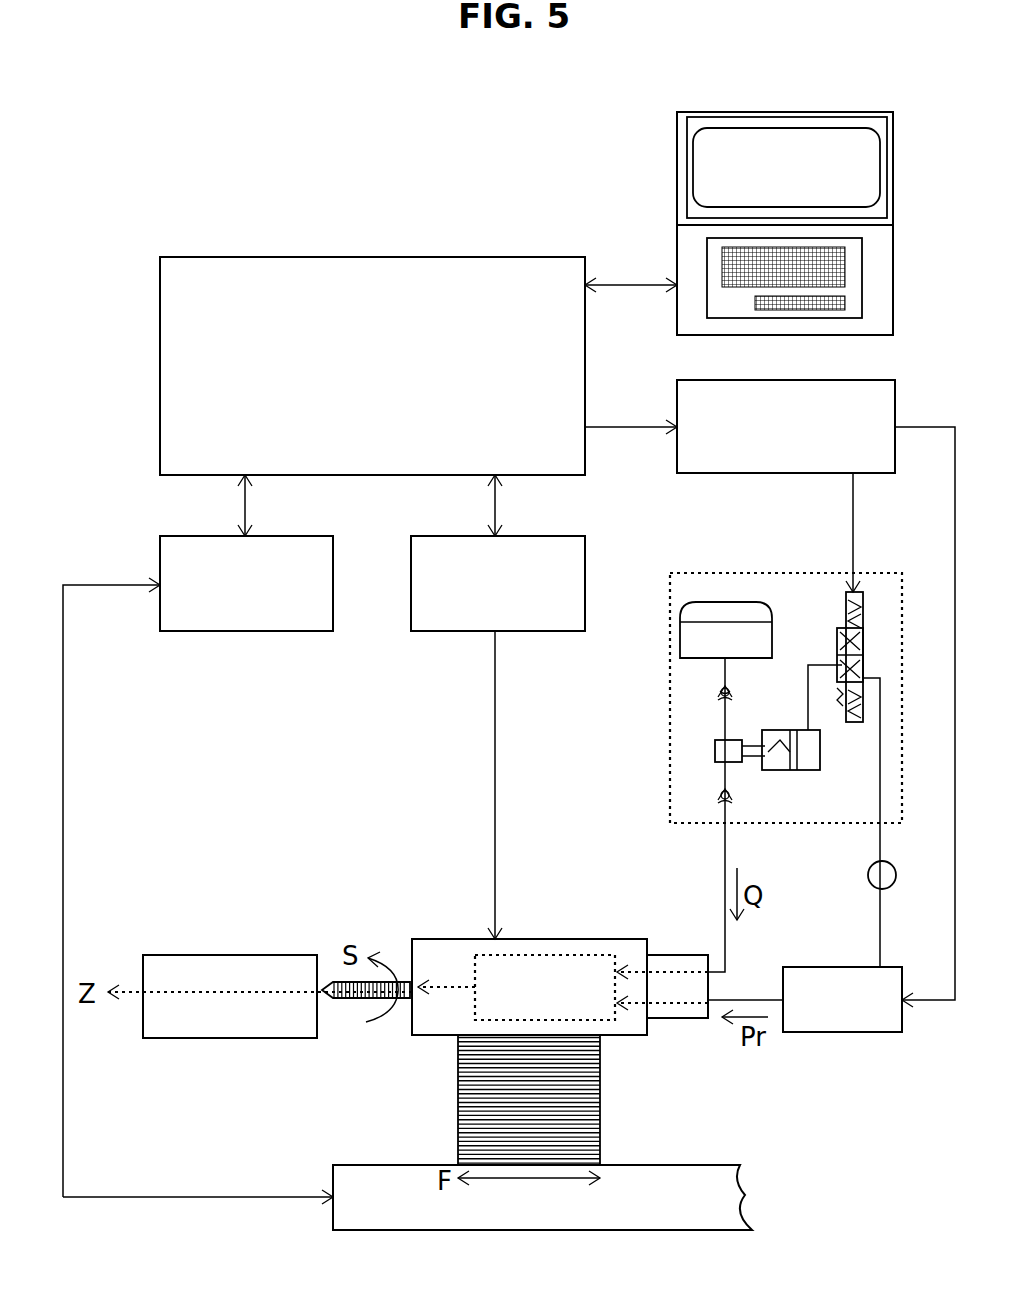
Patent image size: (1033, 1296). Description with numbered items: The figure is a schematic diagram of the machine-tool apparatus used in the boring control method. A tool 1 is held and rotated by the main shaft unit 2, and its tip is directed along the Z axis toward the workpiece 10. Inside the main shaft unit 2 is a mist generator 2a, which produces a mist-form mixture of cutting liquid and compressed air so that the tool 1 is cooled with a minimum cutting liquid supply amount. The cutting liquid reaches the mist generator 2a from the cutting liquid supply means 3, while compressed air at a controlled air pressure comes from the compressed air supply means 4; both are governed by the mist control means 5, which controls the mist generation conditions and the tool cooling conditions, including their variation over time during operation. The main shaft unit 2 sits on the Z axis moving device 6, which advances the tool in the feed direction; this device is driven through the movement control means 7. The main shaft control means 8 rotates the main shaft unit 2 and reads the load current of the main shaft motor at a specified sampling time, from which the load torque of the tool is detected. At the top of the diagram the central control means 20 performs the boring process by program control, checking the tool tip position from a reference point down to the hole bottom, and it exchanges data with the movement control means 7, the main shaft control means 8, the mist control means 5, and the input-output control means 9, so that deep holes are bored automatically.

The tool 1 is at (347, 1003).
The main shaft unit 2 is at (455, 935).
The mist generator 2a is at (563, 987).
The cutting liquid supply means 3 is at (668, 718).
The compressed air supply means 4 is at (842, 999).
The mist control means 5 is at (786, 426).
The Z axis moving device 6 is at (542, 1197).
The movement control means 7 is at (246, 583).
The main shaft control means 8 is at (498, 583).
The input-output control means 9 is at (785, 223).
The workpiece 10 is at (237, 955).
The central control means 20 is at (372, 366).